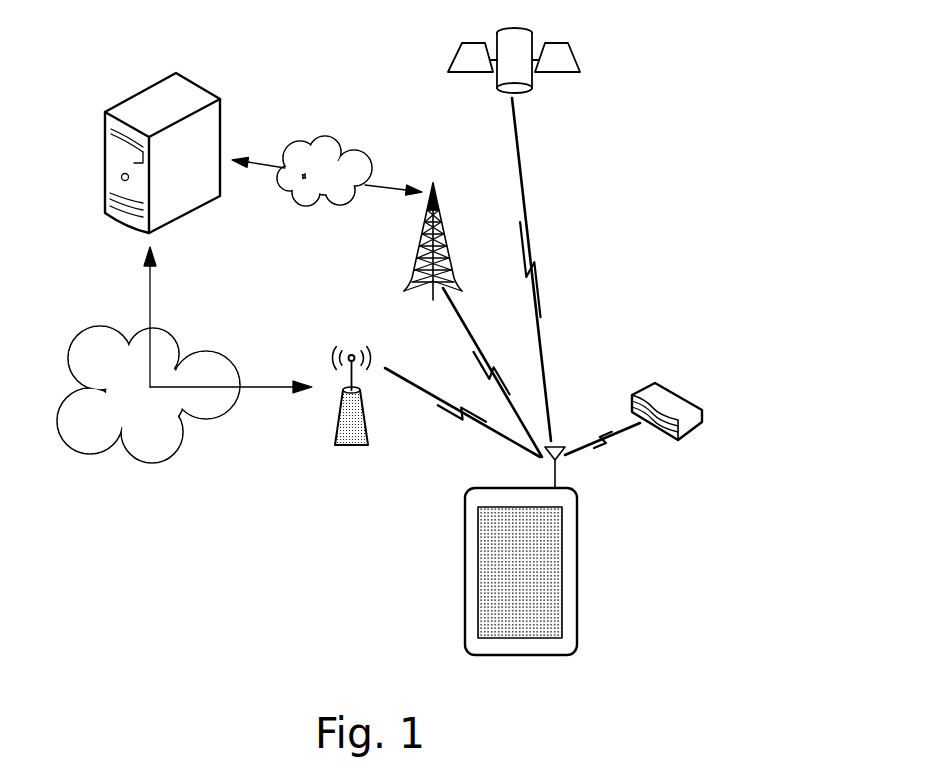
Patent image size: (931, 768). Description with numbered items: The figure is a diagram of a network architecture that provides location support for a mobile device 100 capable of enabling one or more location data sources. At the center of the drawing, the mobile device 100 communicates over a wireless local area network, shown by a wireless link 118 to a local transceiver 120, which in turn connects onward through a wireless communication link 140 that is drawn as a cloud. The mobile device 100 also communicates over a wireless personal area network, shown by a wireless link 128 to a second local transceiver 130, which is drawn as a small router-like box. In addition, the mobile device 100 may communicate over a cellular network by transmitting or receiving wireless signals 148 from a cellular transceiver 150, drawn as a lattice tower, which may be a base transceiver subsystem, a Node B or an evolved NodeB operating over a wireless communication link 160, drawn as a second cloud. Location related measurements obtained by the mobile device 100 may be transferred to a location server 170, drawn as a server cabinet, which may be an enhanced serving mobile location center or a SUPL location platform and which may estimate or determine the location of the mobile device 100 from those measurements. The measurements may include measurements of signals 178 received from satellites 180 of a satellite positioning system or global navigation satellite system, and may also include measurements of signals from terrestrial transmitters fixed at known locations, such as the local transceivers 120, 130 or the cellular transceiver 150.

The mobile device 100 is at (465, 627).
The wireless link 118 is at (465, 417).
The local transceiver 120 is at (358, 447).
The wireless link 128 is at (613, 456).
The local transceiver 130 is at (688, 402).
The wireless communication link 140 is at (155, 463).
The wireless signals 148 is at (452, 307).
The cellular transceiver 150 is at (422, 208).
The wireless communication link 160 is at (335, 137).
The location server 170 is at (222, 98).
The signals 178 is at (525, 177).
The satellites 180 is at (573, 50).